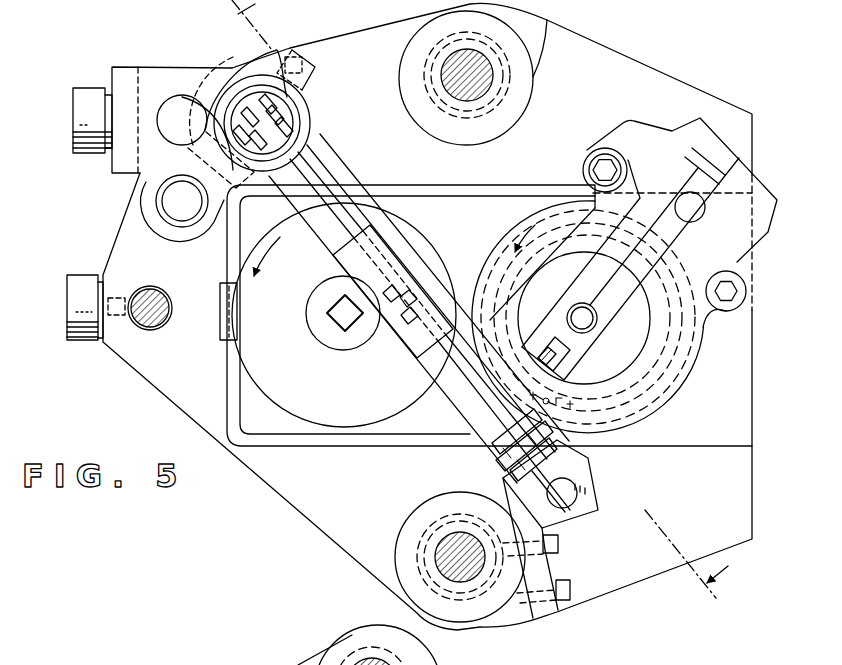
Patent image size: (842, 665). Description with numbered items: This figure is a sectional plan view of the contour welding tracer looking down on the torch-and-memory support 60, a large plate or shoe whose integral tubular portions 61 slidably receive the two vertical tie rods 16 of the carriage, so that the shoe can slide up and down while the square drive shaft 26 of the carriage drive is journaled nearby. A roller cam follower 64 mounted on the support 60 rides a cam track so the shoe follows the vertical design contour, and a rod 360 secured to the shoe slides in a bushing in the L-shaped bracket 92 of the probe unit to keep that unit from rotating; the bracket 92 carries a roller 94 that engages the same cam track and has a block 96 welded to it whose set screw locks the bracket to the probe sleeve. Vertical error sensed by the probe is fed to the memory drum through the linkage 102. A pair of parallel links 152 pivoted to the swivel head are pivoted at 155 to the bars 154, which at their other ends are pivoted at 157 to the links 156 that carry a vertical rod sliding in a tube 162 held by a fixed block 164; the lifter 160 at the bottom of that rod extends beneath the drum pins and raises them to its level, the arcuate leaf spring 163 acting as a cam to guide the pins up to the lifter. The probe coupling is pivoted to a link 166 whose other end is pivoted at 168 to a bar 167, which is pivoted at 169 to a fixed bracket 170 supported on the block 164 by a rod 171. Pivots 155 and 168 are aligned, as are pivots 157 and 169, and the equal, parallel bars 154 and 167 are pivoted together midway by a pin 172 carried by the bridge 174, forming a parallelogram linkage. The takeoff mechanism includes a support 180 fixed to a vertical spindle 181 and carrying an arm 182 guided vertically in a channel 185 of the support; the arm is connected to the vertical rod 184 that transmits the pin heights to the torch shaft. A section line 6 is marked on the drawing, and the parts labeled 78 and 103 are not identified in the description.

The section line 6- 6 is at (489, 299).
The tie rods 16 is at (483, 82).
The square drive shaft 26 is at (157, 322).
The support 60 is at (311, 506).
The tubular portions 61 is at (418, 43).
The roller cam follower 64 is at (80, 306).
The bushing 78 is at (236, 78).
The L-shaped bracket 92 is at (123, 170).
The roller 94 is at (80, 102).
The block 96 is at (310, 108).
The linkage 102 is at (470, 424).
The drive disc 103 is at (490, 215).
The parallel links 152 is at (230, 150).
The bars 154 is at (312, 153).
The pivot 155 is at (279, 42).
The links 156 is at (500, 470).
The pivot 157 is at (590, 440).
The lifter 160 is at (560, 440).
The tube 162 is at (500, 479).
The flexible leaf spring 163 is at (565, 292).
The fixed block 164 is at (302, 203).
The link 166 is at (197, 97).
The bar 167 is at (318, 170).
The pivot 168 is at (290, 128).
The pivot 169 is at (550, 502).
The fixed bracket 170 is at (572, 478).
The rod 171 is at (594, 497).
The pin 172 is at (382, 310).
The bridge 174 is at (390, 263).
The support 180 is at (672, 137).
The spindle 181 is at (700, 214).
The arm 182 is at (628, 294).
The rod 184 is at (588, 327).
The channel 185 is at (638, 232).
The rod 360 is at (173, 213).